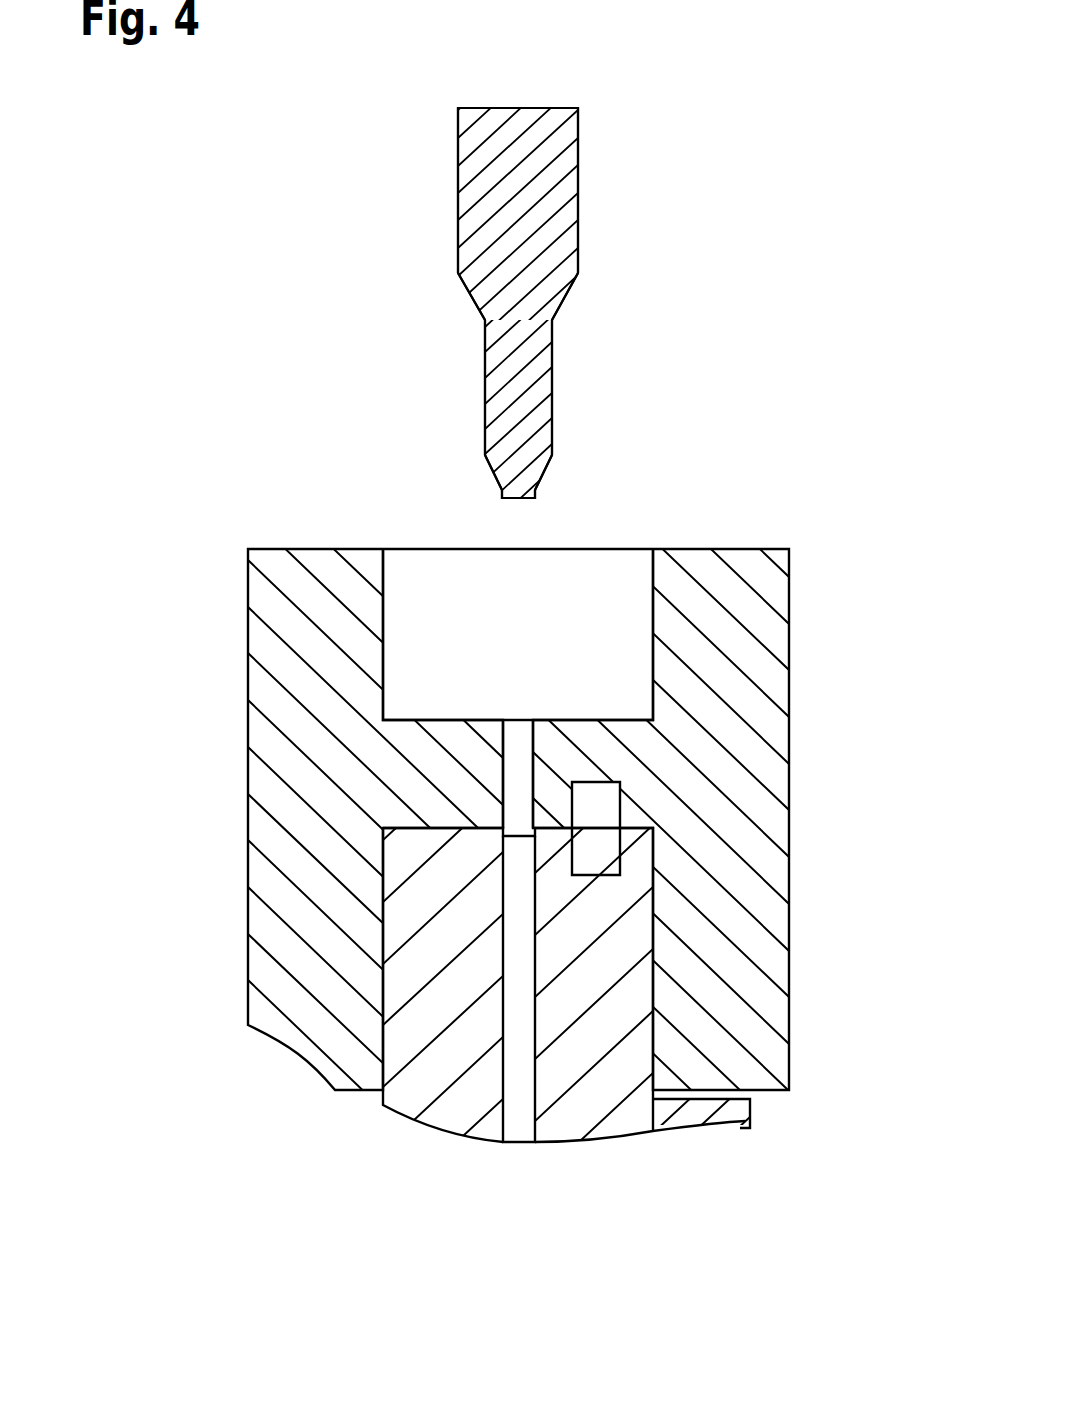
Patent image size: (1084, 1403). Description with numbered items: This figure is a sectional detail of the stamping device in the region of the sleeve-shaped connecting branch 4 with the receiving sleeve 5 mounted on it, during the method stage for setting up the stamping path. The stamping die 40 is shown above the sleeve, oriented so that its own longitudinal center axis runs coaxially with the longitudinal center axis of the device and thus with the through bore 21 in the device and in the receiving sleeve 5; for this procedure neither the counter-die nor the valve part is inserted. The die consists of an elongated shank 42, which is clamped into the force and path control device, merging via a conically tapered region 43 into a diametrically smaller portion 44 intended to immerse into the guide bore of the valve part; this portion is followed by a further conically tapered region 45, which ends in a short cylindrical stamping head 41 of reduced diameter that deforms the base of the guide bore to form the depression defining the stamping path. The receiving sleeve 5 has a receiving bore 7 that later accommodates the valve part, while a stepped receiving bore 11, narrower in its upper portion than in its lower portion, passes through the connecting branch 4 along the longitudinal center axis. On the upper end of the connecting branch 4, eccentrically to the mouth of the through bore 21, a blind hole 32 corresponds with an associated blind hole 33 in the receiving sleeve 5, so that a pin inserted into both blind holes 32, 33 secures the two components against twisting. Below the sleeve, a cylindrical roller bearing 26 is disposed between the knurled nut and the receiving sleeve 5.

The stamping die 40 is at (422, 222).
The elongated shank 42 is at (578, 184).
The conically tapered region 43 is at (565, 301).
The diametrically smaller portion 44 is at (552, 395).
The further conically tapered region 45 is at (538, 472).
The stamping head 41 is at (522, 499).
The receiving sleeve 5 is at (775, 600).
The receiving bore 7 is at (632, 686).
The through bore 21 is at (518, 748).
The blind hole 33 is at (598, 797).
The blind hole 32 is at (597, 856).
The connecting branch 4 is at (608, 1105).
The receiving bore 11 is at (518, 1107).
The cylindrical roller bearing 26 is at (745, 1112).